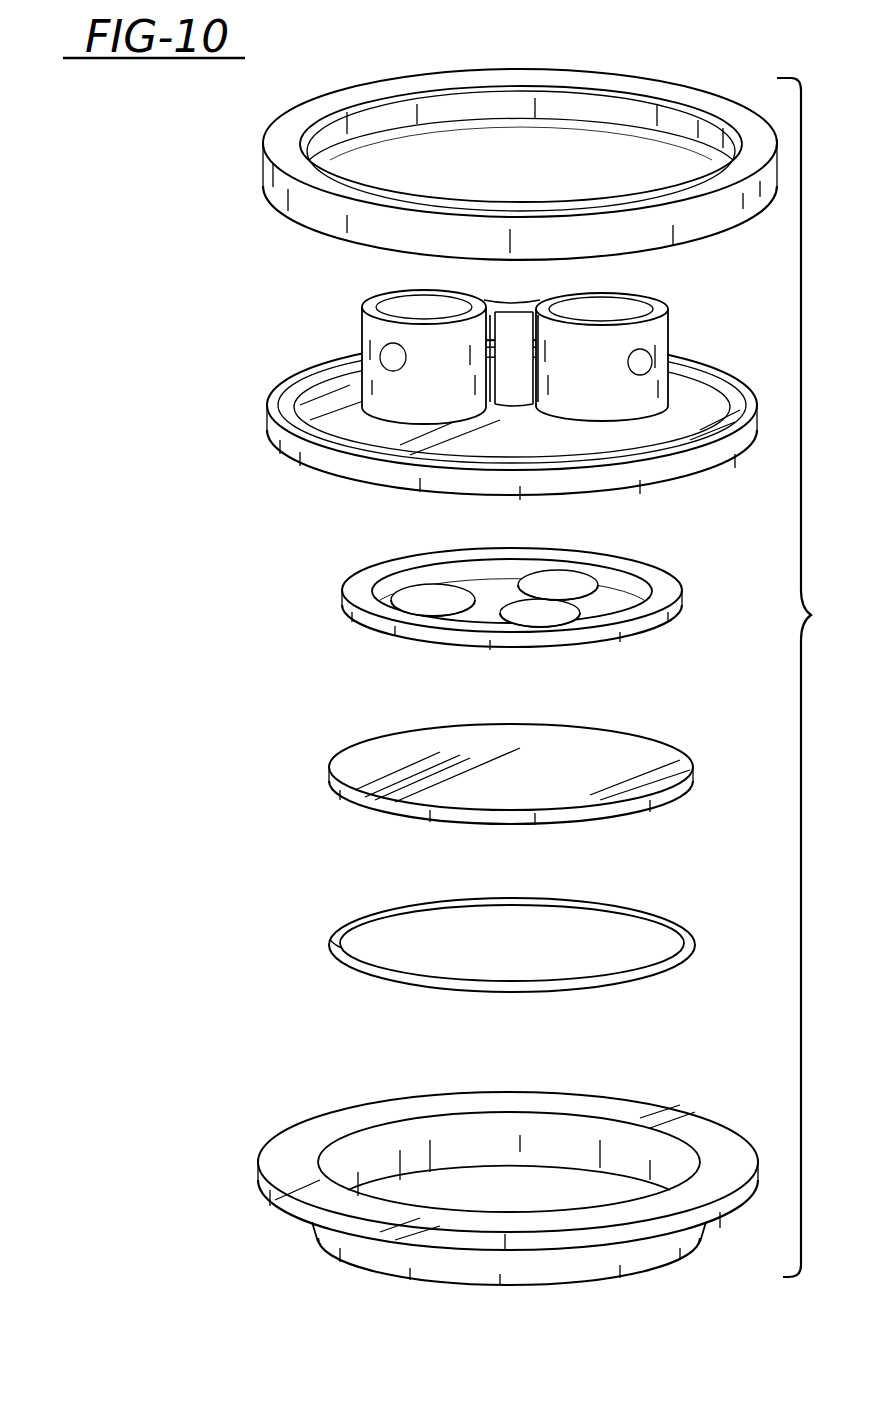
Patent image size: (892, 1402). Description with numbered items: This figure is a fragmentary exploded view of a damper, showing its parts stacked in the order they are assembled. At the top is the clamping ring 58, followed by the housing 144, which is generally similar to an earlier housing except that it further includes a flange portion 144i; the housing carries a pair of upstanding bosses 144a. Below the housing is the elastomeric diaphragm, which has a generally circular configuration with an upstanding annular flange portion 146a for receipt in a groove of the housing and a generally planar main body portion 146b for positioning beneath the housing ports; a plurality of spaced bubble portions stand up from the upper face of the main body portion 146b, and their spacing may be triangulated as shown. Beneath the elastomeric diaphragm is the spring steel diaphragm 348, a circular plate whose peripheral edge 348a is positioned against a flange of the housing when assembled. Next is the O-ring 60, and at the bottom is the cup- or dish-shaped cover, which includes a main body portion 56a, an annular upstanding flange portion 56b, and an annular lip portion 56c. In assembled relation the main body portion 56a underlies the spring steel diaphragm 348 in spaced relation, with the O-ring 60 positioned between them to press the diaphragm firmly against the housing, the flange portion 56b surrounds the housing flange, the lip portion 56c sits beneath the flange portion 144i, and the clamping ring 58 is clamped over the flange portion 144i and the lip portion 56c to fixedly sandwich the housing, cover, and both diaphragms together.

The clamping ring 58 is at (262, 163).
The housing 144 is at (453, 387).
The cylindrical boss 144a is at (365, 335).
The flange portion 144i is at (275, 428).
The annular flange portion 146a is at (362, 572).
The main body portion 146b is at (603, 580).
The spring steel diaphragm 348 is at (531, 748).
The peripheral edge 348a is at (688, 760).
The O-ring 60 is at (697, 952).
The main body portion 56a is at (425, 1283).
The annular upstanding flange portion 56b is at (317, 1238).
The annular lip portion 56c is at (310, 1140).